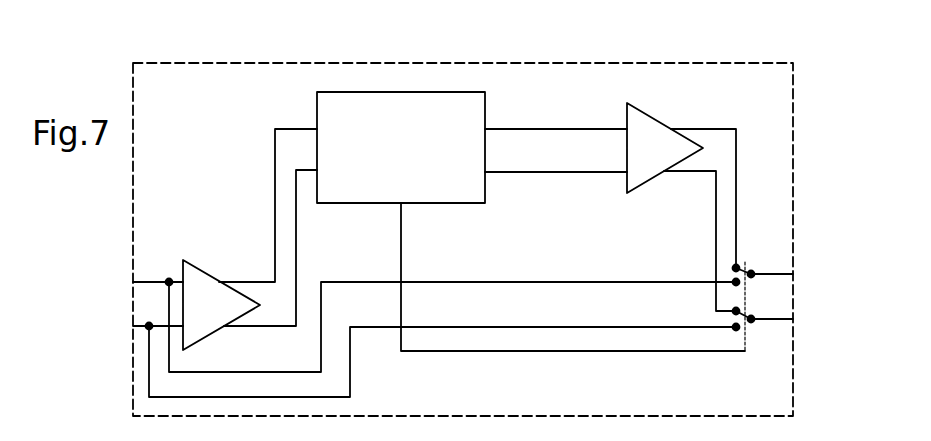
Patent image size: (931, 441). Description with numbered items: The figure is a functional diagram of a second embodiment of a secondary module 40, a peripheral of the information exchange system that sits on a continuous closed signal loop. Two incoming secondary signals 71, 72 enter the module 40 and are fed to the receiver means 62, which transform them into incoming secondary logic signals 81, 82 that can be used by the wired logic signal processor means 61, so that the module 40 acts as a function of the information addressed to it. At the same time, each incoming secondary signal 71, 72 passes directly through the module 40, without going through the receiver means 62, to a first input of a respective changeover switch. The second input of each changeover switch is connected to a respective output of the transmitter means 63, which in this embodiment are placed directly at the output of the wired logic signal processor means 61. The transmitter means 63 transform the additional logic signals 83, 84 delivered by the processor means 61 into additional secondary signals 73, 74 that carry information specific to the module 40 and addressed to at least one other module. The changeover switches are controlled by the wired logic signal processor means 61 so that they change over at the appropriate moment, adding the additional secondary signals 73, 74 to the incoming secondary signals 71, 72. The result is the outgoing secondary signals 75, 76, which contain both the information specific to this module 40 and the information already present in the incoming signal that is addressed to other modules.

The secondary module 40 is at (653, 63).
The wired logic signal processor means 61 is at (428, 92).
The receiver means 62 is at (205, 292).
The transmitter means 63 is at (645, 166).
The incoming secondary signal 71 is at (152, 280).
The incoming secondary signal 72 is at (141, 324).
The additional secondary signal 73 is at (711, 129).
The additional secondary signal 74 is at (715, 238).
The outgoing secondary signal 75 is at (773, 275).
The outgoing secondary signal 76 is at (771, 319).
The incoming secondary logic signal 81 is at (274, 142).
The incoming secondary logic signal 82 is at (297, 220).
The additional logic signal 83 is at (517, 129).
The additional logic signal 84 is at (532, 172).